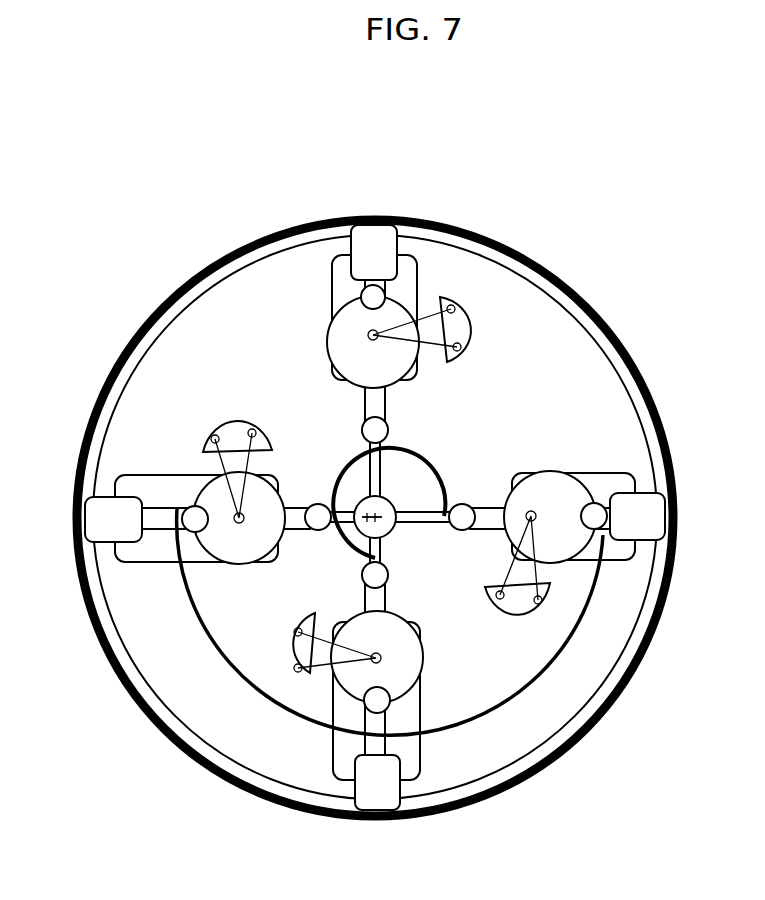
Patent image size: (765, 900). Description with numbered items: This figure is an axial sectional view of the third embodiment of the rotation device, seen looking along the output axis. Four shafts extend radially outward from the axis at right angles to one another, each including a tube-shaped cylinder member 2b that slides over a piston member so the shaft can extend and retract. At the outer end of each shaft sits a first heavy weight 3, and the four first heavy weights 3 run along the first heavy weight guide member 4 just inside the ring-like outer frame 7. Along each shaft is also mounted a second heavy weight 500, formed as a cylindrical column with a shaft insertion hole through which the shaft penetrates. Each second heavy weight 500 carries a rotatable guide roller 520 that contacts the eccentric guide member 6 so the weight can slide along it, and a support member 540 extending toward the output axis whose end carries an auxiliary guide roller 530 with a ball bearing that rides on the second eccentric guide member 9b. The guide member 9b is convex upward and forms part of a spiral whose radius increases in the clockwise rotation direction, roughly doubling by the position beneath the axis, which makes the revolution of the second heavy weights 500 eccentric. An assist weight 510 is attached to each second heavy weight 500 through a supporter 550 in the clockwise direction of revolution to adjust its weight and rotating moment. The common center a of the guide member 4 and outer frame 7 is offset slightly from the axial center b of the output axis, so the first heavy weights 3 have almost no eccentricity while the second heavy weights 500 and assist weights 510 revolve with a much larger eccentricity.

The cylinder member 2b is at (158, 523).
The first heavy weight 3 is at (376, 237).
The first heavy weight guide member 4 is at (480, 793).
The eccentric guide member 6 is at (550, 653).
The ring-like outer frame 7 is at (550, 770).
The second eccentric guide member 9b is at (413, 446).
The second heavy weight 500 is at (350, 340).
The assist weight 510 is at (472, 320).
The guide roller 520 is at (597, 505).
The auxiliary guide roller 530 is at (372, 431).
The support member 540 is at (300, 512).
The supporter 550 is at (495, 572).
The center of the first heavy weight guide member and outer frame a is at (378, 517).
The axial center of the output axis b is at (365, 522).